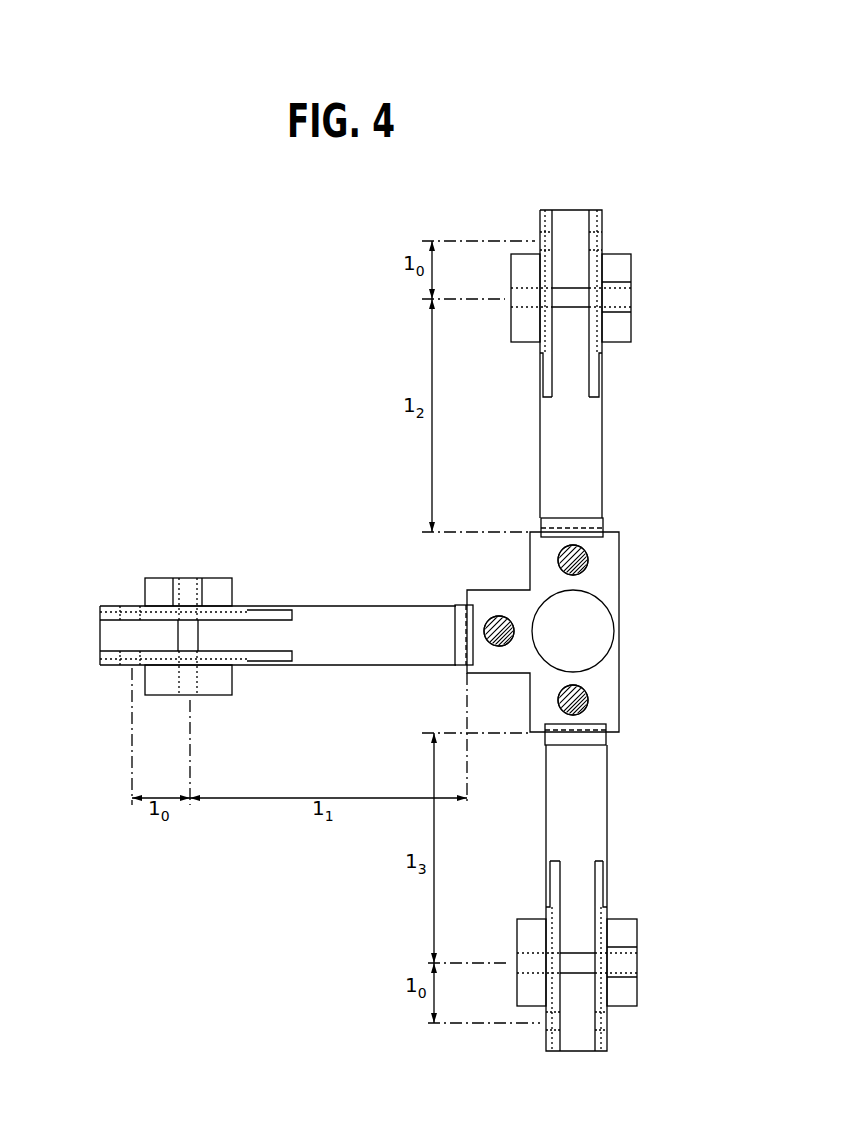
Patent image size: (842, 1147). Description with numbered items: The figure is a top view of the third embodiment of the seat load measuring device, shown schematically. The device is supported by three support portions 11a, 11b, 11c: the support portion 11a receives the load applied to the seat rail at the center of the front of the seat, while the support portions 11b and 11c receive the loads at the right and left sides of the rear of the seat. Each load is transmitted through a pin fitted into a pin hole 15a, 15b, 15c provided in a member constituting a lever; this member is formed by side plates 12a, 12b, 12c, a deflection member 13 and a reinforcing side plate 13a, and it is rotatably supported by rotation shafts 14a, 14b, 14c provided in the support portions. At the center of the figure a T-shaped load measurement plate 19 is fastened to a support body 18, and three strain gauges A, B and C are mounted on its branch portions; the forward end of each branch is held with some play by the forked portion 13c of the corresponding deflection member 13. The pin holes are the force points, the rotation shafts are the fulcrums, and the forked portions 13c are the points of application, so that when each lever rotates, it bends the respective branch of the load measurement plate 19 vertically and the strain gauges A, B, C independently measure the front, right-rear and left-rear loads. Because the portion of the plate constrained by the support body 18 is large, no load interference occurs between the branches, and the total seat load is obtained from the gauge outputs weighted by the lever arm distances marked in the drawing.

The support portion 11a is at (232, 696).
The support portion 11b is at (631, 325).
The support portion 11c is at (631, 935).
The side plate 12a is at (100, 612).
The side plate 12b is at (547, 212).
The side plate 12c is at (553, 1047).
The deflection member 13 is at (590, 440).
The reinforcing side plate 13a is at (599, 383).
The forked portion 13c is at (545, 524).
The rotation shaft 14a is at (185, 585).
The rotation shaft 14b is at (622, 296).
The rotation shaft 14c is at (630, 965).
The pin hole 15a is at (128, 609).
The pin hole 15b is at (537, 238).
The pin hole 15c is at (607, 1020).
The support body 18 is at (599, 604).
The load measurement plate 19 is at (604, 561).
The strain gauge A is at (503, 613).
The strain gauge B is at (590, 556).
The strain gauge C is at (590, 696).